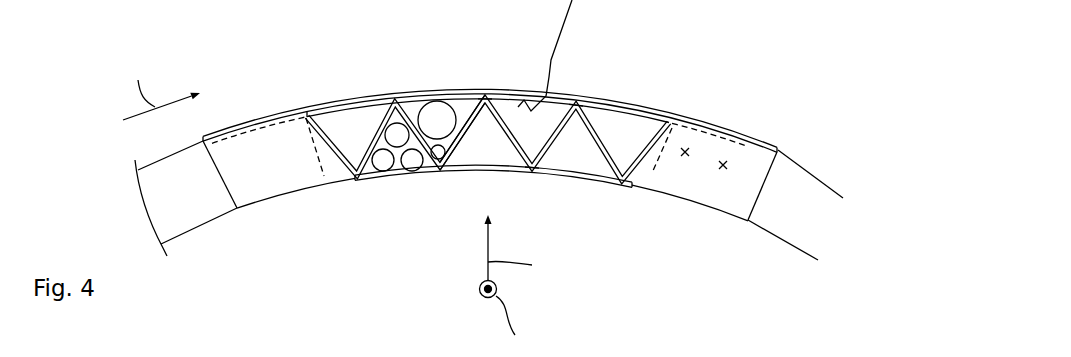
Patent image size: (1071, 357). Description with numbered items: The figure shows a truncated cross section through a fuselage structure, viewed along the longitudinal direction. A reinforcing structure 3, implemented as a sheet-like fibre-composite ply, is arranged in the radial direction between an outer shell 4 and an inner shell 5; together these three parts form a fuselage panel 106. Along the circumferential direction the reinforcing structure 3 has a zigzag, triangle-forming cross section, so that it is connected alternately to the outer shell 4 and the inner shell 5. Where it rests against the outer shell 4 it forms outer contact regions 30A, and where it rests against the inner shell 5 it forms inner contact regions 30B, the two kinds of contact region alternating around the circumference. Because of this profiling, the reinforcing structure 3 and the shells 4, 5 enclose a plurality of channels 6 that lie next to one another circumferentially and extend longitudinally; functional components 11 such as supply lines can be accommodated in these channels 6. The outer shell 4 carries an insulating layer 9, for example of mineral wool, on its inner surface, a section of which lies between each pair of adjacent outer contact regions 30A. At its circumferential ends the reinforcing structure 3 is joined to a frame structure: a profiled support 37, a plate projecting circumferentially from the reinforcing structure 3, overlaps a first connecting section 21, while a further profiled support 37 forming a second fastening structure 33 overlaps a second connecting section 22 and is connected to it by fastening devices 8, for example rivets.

The reinforcing structure 3 is at (600, 128).
The outer shell 4 is at (281, 112).
The inner shell 5 is at (603, 184).
The channels 6 is at (462, 91).
The fastening devices 8 is at (725, 167).
The insulating layer 9 is at (348, 108).
The functional components 11 is at (400, 112).
The first connecting section 21 is at (313, 152).
The second connecting section 22 is at (744, 150).
The outer contact regions 30A is at (486, 89).
The inner contact regions 30B is at (533, 177).
The second fastening structure 33 is at (333, 173).
The profiled support 37 is at (479, 195).
The fuselage panel 106 is at (751, 90).